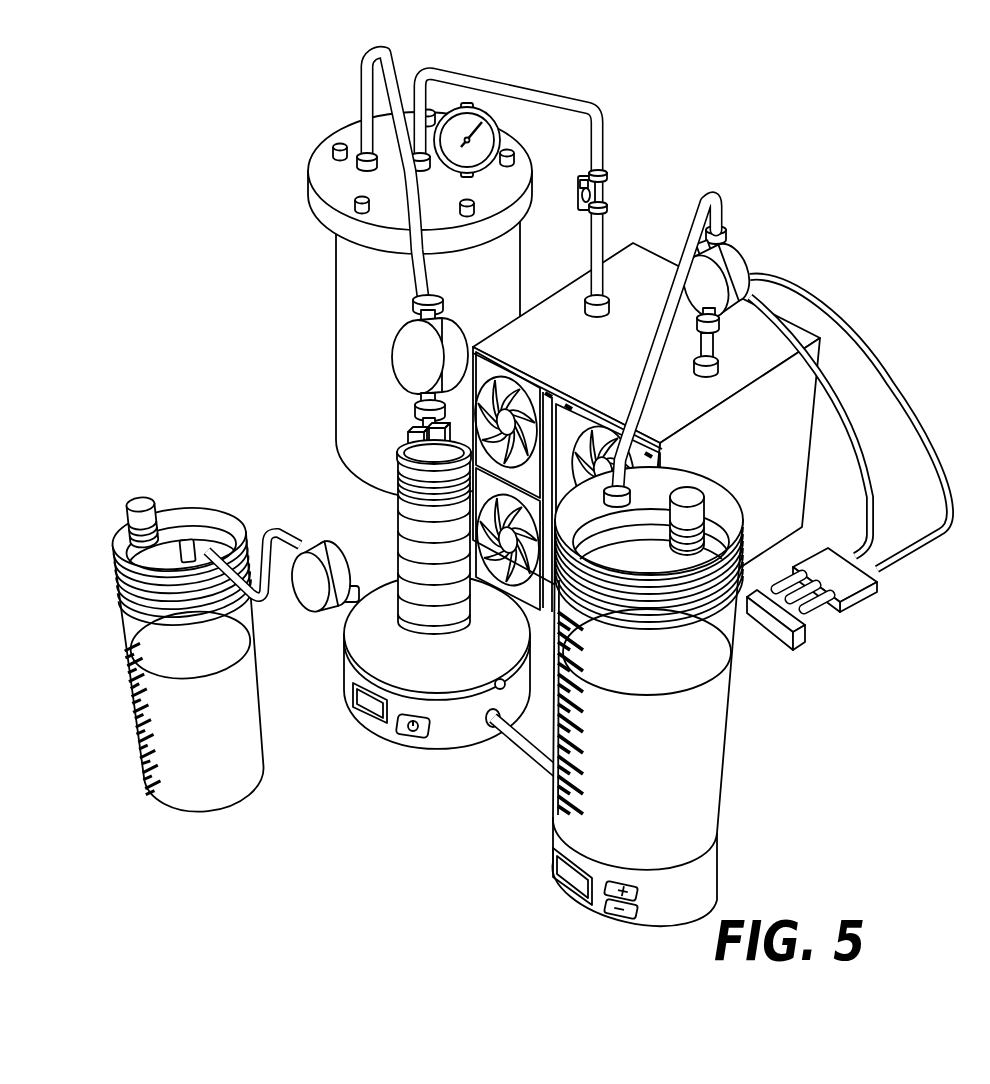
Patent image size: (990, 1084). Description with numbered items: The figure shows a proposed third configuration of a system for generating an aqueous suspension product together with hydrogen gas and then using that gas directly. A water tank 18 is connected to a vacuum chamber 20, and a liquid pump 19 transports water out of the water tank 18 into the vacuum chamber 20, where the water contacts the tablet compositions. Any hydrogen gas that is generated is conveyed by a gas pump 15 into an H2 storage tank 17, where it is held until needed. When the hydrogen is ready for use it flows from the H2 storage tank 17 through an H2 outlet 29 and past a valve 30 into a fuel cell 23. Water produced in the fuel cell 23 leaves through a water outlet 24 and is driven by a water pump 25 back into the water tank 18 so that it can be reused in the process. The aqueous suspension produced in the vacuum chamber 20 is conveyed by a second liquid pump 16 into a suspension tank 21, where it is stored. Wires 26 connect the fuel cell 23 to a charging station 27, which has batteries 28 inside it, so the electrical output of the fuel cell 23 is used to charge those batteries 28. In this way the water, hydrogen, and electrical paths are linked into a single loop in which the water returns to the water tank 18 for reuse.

The gas pump 15 is at (393, 350).
The liquid pump 16 is at (318, 542).
The H2 storage tank 17 is at (333, 283).
The water tank 18 is at (710, 800).
The liquid pump 19 is at (708, 866).
The vacuum chamber 20 is at (437, 742).
The suspension tank 21 is at (240, 787).
The fuel cell 23 is at (780, 347).
The water outlet 24 is at (718, 195).
The water pump 25 is at (742, 268).
The wires 26 is at (888, 383).
The charging station 27 is at (873, 598).
The batteries 28 is at (810, 623).
The H2 outlet 29 is at (598, 118).
The valve 30 is at (604, 196).